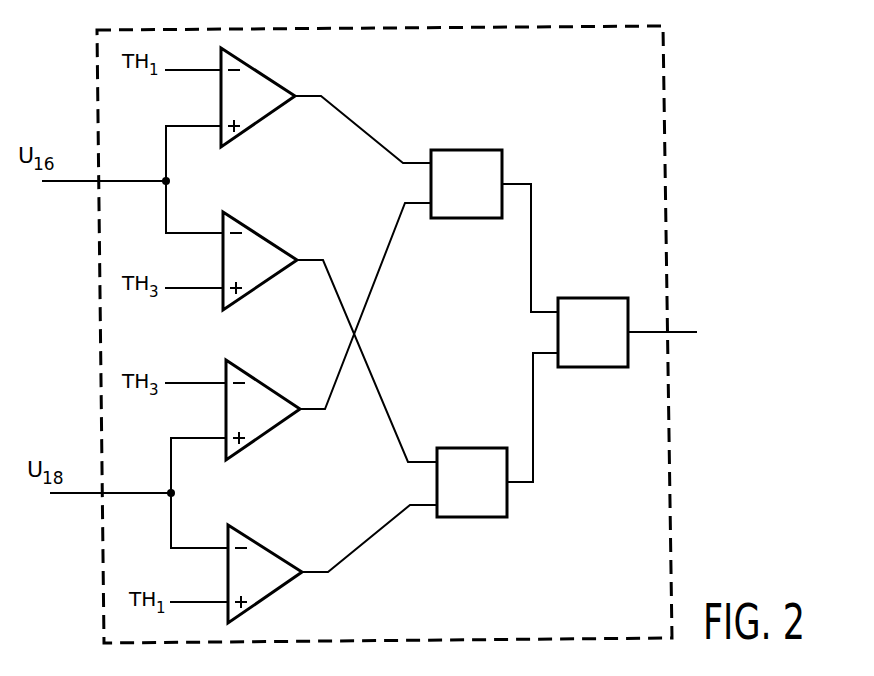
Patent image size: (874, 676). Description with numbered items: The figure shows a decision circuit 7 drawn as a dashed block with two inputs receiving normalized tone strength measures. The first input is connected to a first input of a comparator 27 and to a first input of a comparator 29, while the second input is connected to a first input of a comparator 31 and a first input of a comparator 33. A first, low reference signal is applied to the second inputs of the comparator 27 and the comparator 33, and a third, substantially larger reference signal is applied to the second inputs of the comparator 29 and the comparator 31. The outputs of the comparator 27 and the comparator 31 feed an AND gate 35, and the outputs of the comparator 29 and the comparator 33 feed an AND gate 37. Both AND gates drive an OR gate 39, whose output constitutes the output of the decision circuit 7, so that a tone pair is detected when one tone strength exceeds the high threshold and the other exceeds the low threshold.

The decision circuit 7 is at (98, 330).
The comparator 27 is at (247, 63).
The comparator 29 is at (250, 226).
The comparator 31 is at (268, 447).
The comparator 33 is at (252, 608).
The AND gate 35 is at (469, 218).
The AND gate 37 is at (468, 448).
The OR gate 39 is at (597, 298).